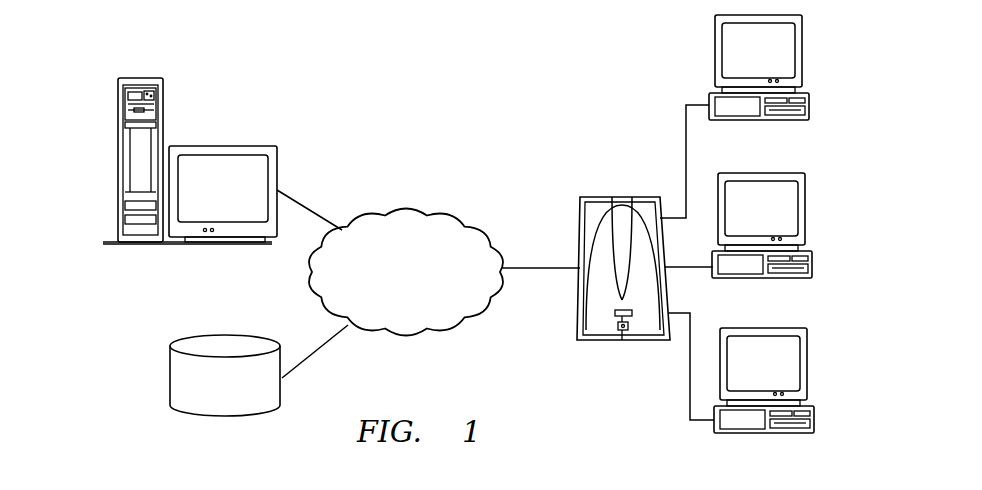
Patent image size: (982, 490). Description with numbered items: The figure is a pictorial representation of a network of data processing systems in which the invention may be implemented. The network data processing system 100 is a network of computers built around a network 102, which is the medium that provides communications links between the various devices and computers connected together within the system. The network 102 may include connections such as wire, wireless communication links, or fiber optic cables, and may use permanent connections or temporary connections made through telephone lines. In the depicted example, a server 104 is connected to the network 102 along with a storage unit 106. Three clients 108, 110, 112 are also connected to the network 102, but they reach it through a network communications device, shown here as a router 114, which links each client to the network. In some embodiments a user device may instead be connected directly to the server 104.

The network data processing system 100 is at (360, 86).
The network 102 is at (428, 300).
The server 104 is at (163, 103).
The storage unit 106 is at (170, 378).
The client 108 is at (802, 60).
The client 110 is at (805, 213).
The client 112 is at (808, 368).
The router 114 is at (620, 196).